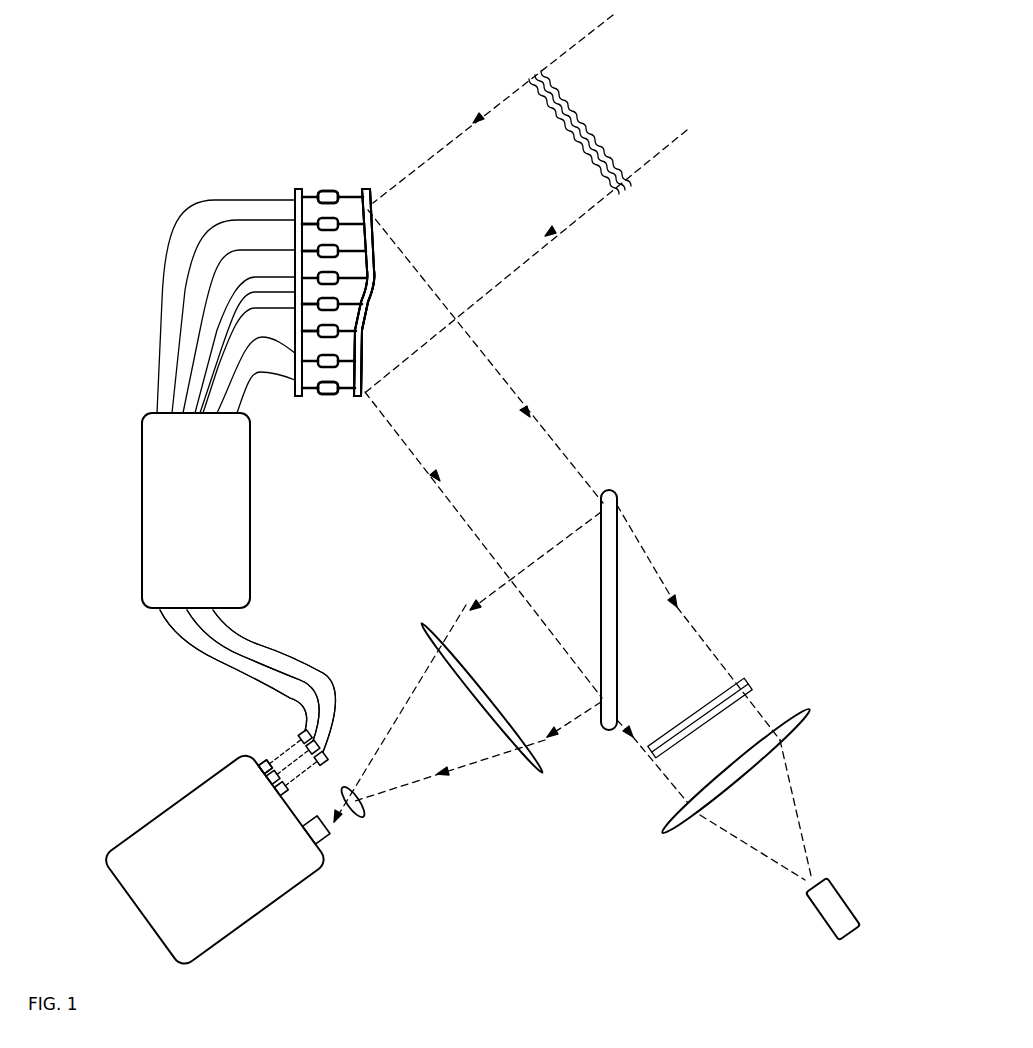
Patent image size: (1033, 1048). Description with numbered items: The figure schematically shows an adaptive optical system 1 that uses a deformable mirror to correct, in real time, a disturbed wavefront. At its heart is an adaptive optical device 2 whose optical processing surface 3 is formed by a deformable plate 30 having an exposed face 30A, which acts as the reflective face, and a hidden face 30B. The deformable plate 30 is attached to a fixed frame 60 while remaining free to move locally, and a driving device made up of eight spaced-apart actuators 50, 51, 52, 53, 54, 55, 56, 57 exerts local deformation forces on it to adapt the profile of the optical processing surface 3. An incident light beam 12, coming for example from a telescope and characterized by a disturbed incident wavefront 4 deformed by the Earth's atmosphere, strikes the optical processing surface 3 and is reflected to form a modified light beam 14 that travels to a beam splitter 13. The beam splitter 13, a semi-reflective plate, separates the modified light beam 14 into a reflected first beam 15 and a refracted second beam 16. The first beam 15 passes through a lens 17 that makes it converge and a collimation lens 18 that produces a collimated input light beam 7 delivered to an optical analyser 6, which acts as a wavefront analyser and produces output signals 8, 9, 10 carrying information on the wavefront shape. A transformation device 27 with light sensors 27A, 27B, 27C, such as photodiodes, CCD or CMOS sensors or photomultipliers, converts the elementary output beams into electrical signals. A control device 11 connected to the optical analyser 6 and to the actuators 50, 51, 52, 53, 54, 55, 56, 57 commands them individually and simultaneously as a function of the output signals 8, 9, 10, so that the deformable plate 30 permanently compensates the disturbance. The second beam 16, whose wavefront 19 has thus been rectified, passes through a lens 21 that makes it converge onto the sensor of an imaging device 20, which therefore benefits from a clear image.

The adaptive optical system 1 is at (137, 86).
The adaptive optical device 2 is at (332, 170).
The optical processing surface 3 is at (377, 299).
The incident wavefront 4 is at (628, 188).
The optical analyser 6 is at (236, 893).
The input light beam 7 is at (330, 830).
The output signal 8 is at (296, 785).
The output signal 9 is at (276, 748).
The output signal 10 is at (262, 752).
The control device 11 is at (176, 502).
The incident light beam 12 is at (613, 15).
The beam splitter 13 is at (608, 505).
The modified light beam 14 is at (510, 470).
The first beam 15 is at (482, 642).
The second beam 16 is at (662, 640).
The lens 17 is at (538, 771).
The lens 18 is at (365, 808).
The wavefront 19 is at (748, 670).
The imaging device 20 is at (836, 907).
The lens 21 is at (662, 835).
The transformation device 27 is at (289, 724).
The light sensor 27A is at (307, 728).
The light sensor 27B is at (322, 742).
The light sensor 27C is at (324, 758).
The deformable plate 30 is at (365, 328).
The exposed face 30A is at (375, 270).
The hidden face 30B is at (362, 191).
The actuator 50 is at (338, 192).
The actuator 51 is at (312, 223).
The actuator 52 is at (314, 248).
The actuator 53 is at (296, 222).
The actuator 54 is at (296, 330).
The actuator 55 is at (318, 335).
The actuator 56 is at (360, 392).
The actuator 57 is at (330, 394).
The fixed frame 60 is at (285, 262).